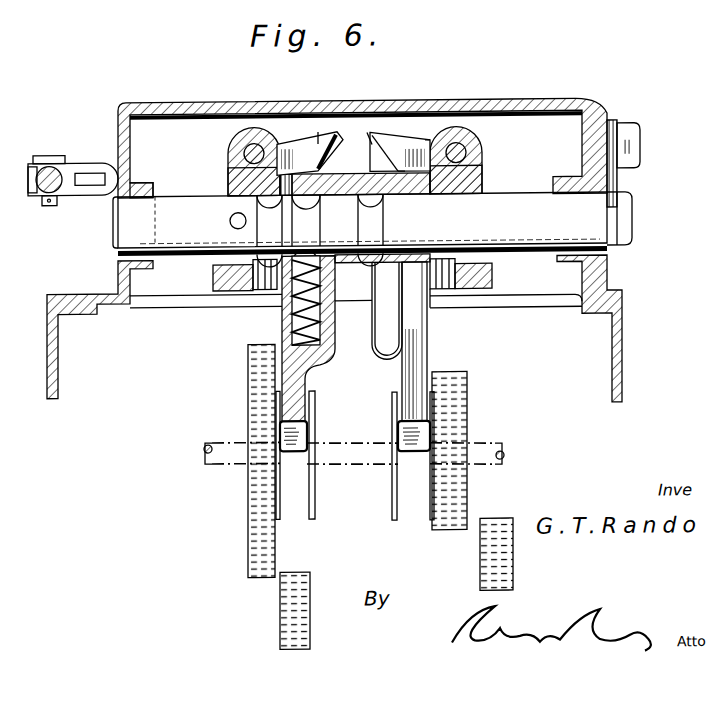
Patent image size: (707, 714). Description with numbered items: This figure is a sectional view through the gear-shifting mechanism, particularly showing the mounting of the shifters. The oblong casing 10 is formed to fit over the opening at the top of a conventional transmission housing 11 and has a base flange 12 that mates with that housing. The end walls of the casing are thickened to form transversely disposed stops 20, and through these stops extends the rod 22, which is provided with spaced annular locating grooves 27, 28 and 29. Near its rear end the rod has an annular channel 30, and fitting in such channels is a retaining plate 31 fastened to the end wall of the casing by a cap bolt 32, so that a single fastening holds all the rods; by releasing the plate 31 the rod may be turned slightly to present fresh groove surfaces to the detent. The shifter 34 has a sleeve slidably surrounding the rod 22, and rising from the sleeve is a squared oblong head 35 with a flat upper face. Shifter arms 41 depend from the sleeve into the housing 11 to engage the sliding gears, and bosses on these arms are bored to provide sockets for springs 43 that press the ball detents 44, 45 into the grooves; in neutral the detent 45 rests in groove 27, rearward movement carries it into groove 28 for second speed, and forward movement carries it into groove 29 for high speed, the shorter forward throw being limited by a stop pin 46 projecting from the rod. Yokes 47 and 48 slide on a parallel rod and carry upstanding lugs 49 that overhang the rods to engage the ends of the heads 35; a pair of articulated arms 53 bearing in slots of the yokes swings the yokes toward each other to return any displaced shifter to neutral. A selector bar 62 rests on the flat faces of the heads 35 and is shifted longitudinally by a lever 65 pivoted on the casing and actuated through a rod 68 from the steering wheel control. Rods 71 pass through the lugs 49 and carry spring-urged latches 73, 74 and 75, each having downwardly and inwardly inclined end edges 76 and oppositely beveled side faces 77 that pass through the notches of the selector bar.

The oblong casing 10 is at (545, 104).
The transmission housing 11 is at (622, 393).
The base flange 12 is at (62, 294).
The stops 20 is at (152, 183).
The rod 22 is at (360, 223).
The locating groove 27 is at (306, 220).
The locating groove 28 is at (370, 230).
The locating groove 29 is at (269, 231).
The annular channels 30 is at (617, 227).
The retaining plate 31 is at (614, 125).
The cap bolt 32 is at (640, 135).
The shifter 34 is at (432, 256).
The squared oblong head 35 is at (417, 198).
The shifter arms 41 is at (303, 395).
The springs 43 is at (282, 320).
The ball detent 44 is at (386, 348).
The ball detent 45 is at (312, 251).
The stop pin 46 is at (230, 222).
The yoke 47 is at (228, 187).
The yoke 48 is at (482, 191).
The upstanding lugs 49 is at (236, 146).
The arms 53 is at (213, 280).
The selector bar 62 is at (341, 151).
The lever 65 is at (92, 163).
The rod 68 is at (40, 165).
The rods 71 is at (254, 129).
The latch 73 is at (289, 146).
The latch 74 is at (412, 147).
The latch 75 is at (403, 164).
The inclined end edges 76 is at (317, 134).
The beveled side faces 77 is at (330, 131).